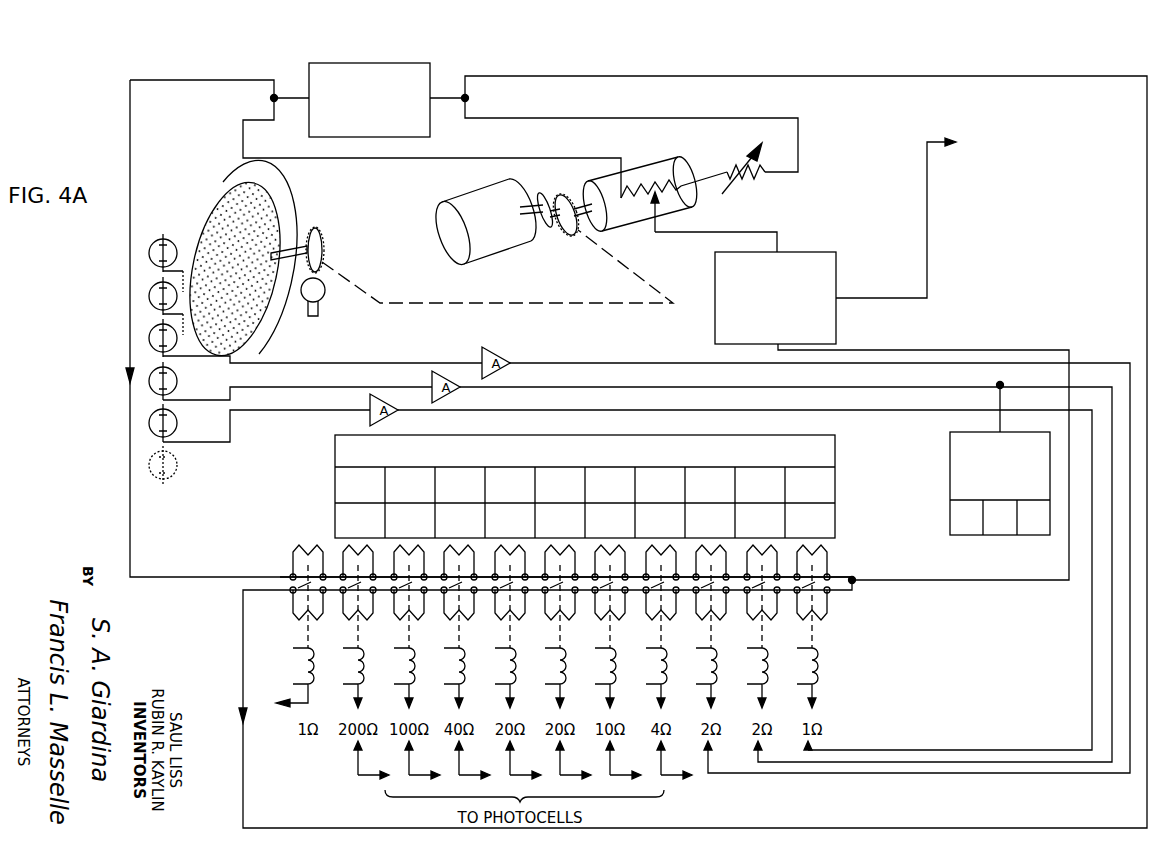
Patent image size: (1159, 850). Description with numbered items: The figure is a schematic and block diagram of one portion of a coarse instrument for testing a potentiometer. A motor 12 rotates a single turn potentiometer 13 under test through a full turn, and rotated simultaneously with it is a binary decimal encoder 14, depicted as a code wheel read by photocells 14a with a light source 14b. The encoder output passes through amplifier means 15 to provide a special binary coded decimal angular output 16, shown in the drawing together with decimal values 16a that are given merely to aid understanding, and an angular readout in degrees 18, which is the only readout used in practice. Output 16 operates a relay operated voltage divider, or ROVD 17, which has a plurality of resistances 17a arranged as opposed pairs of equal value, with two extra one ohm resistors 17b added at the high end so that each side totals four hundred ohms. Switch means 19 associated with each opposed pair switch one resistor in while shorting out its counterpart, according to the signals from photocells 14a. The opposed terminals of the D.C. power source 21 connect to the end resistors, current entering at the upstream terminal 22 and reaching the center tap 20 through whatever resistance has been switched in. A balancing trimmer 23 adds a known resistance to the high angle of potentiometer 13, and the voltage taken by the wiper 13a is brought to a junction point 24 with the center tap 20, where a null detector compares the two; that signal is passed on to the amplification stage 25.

The D.C. power source 21 is at (306, 77).
The motor 12 is at (445, 196).
The single turn potentiometer 13 is at (645, 158).
The wiper 13a is at (658, 230).
The balancing trimmer 23 is at (748, 185).
The junction point 24 is at (816, 250).
The amplification stage 25 is at (966, 206).
The binary decimal encoder 14 is at (202, 183).
The photocells 14a is at (149, 297).
The light source 14b is at (326, 300).
The amplifier means 15 is at (500, 351).
The decimal values 16a is at (332, 488).
The special binary coded decimal angular output 16 is at (332, 522).
The relay operated voltage divider (ROVD) 17 is at (824, 606).
The resistances 17a is at (826, 552).
The extra 1 ohm resistors 17b is at (292, 552).
The angular readout in degrees 18 is at (1043, 536).
The switch means 19 is at (816, 666).
The center tap 20 is at (852, 575).
The upstream terminal 22 is at (289, 577).